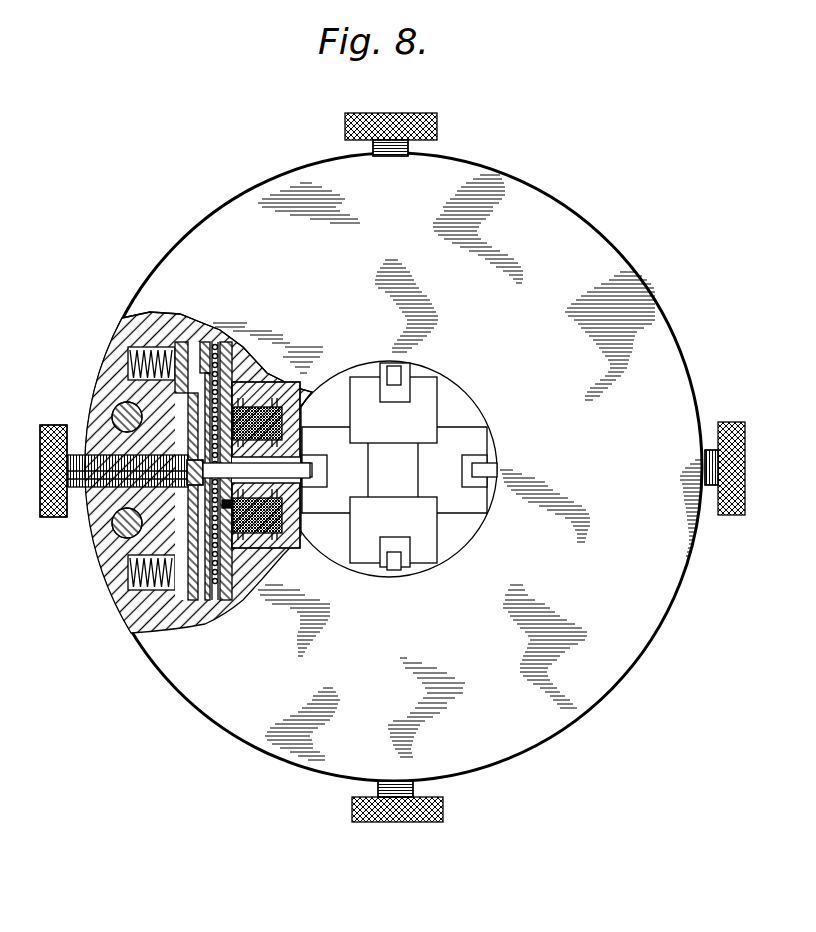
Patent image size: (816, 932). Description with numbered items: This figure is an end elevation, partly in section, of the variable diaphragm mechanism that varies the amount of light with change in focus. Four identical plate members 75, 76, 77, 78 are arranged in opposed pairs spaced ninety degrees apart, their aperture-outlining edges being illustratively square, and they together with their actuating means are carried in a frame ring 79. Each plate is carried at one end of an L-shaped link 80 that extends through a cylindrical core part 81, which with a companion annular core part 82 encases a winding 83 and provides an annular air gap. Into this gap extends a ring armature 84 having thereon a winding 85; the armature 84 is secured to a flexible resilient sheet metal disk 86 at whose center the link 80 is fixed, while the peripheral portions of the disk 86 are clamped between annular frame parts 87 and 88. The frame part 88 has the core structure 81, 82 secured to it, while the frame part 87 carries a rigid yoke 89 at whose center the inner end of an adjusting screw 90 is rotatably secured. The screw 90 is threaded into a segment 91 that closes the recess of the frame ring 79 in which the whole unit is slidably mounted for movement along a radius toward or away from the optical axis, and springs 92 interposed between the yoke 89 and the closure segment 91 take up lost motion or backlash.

The plate member 75 is at (452, 470).
The plate member 76 is at (393, 403).
The plate member 77 is at (335, 470).
The plate member 78 is at (393, 532).
The frame ring 79 is at (128, 322).
The L-shaped link 80 is at (395, 568).
The cylindrical core part 81 is at (280, 453).
The annular core part 82 is at (262, 390).
The winding 83 is at (270, 550).
The ring armature 84 is at (223, 503).
The winding 85 is at (210, 520).
The flexible resilient sheet metal disk 86 is at (212, 416).
The annular frame part 87 is at (215, 600).
The annular frame part 88 is at (298, 538).
The rigid yoke 89 is at (185, 402).
The adjusting screw 90 is at (82, 488).
The segment 91 is at (102, 380).
The springs 92 is at (130, 575).